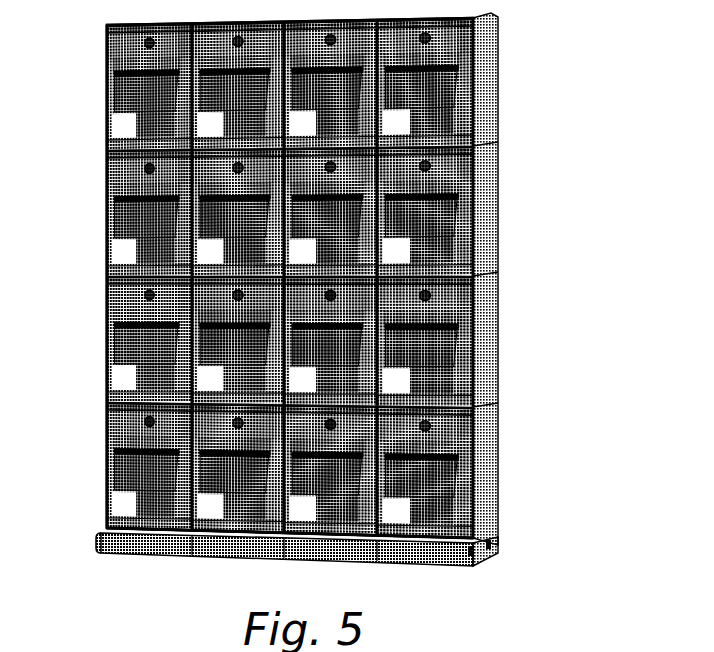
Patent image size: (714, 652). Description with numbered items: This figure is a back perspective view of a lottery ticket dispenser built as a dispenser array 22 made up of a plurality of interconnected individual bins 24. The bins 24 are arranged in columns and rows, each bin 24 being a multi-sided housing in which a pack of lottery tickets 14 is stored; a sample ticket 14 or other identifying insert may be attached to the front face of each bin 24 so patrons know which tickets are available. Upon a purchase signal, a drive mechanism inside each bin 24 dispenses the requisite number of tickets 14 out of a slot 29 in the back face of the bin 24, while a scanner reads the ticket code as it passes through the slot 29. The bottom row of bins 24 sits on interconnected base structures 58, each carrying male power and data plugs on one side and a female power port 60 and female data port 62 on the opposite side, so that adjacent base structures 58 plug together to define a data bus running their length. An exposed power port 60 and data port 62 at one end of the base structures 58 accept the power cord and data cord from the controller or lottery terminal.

The dispenser array 22 is at (588, 108).
The bin 24 is at (499, 58).
The lottery ticket 14 is at (122, 93).
The slot 29 is at (135, 322).
The base structure 58 is at (133, 545).
The power port 60 is at (491, 549).
The data port 62 is at (473, 554).